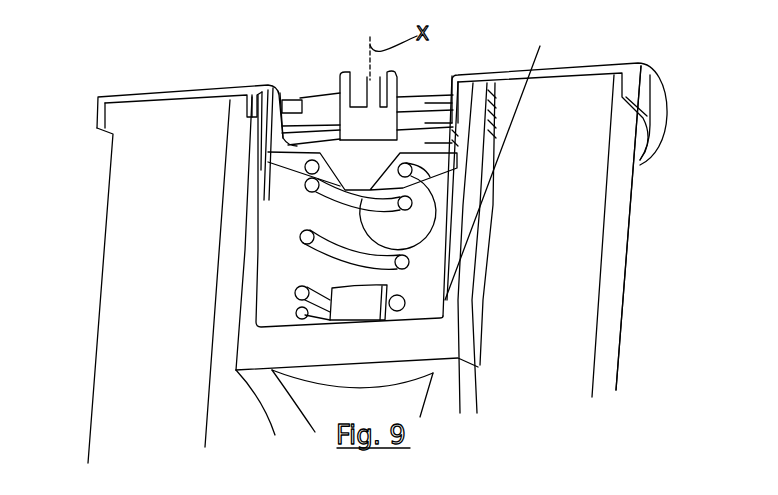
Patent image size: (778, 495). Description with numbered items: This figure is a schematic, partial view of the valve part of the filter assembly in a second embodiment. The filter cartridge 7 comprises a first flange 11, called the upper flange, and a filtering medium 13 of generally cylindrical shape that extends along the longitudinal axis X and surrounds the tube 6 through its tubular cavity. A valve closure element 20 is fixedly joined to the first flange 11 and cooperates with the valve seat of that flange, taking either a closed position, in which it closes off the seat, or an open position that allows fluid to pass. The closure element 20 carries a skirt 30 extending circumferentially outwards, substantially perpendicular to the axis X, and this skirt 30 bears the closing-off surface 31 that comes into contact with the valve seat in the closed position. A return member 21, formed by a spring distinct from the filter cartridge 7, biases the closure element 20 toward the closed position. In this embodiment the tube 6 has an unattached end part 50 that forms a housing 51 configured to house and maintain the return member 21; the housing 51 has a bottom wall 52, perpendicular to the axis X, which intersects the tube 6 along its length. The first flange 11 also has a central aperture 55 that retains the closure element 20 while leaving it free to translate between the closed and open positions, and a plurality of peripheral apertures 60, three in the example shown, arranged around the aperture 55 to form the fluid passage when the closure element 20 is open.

The tube 6 is at (448, 300).
The filter cartridge 7 is at (97, 403).
The first flange 11 is at (222, 83).
The filtering medium 13 is at (577, 250).
The valve closure element 20 is at (292, 168).
The return member 21 is at (262, 300).
The skirt 30 is at (262, 186).
The closing-off surface 31 is at (291, 134).
The unattached end part 50 is at (500, 165).
The housing 51 is at (438, 266).
The bottom wall 52 is at (395, 325).
The central aperture 55 is at (409, 108).
The apertures 60 is at (295, 146).